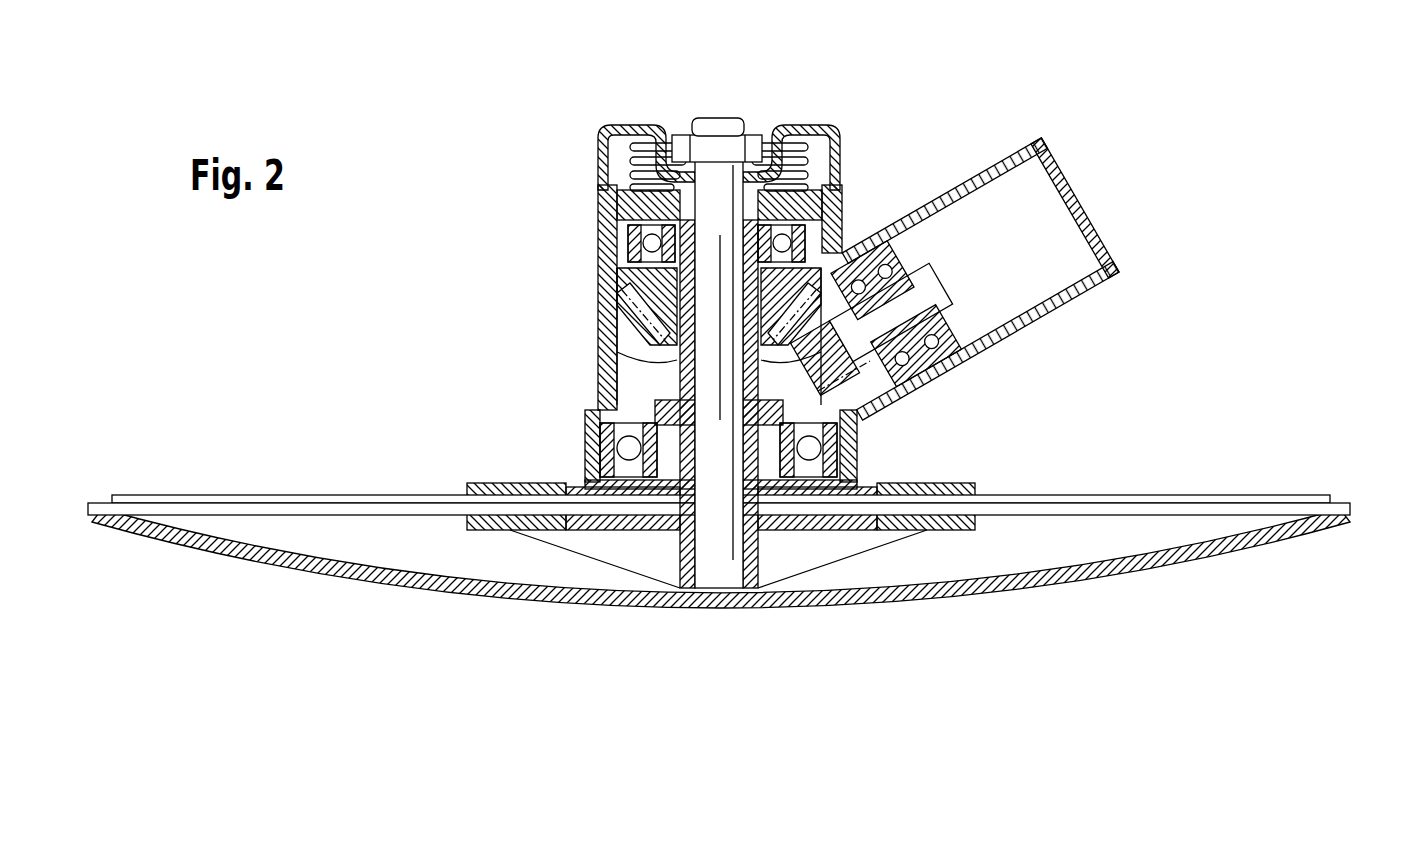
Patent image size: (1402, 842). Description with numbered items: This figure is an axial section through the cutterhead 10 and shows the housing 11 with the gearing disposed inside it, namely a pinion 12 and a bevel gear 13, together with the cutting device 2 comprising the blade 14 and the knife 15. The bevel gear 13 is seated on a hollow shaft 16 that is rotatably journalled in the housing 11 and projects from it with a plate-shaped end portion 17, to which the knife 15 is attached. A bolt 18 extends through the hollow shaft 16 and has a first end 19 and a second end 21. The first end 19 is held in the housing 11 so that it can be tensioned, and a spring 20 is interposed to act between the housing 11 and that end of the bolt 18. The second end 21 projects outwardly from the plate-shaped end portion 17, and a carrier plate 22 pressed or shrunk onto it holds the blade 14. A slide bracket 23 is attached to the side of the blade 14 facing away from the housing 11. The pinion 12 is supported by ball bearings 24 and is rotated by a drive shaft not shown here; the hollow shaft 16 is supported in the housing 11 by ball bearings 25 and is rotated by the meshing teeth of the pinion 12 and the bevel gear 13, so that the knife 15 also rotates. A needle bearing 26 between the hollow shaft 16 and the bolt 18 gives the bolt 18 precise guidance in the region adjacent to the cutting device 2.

The cutting device 2 is at (1342, 492).
The cutterhead 10 is at (508, 130).
The housing 11 is at (937, 212).
The pinion 12 is at (898, 398).
The bevel gear 13 is at (640, 287).
The blade 14 is at (1110, 508).
The knife 15 is at (1140, 497).
The hollow shaft 16 is at (660, 360).
The plate-shaped end portion 17 is at (862, 494).
The bolt 18 is at (826, 216).
The first end 19 is at (700, 118).
The spring 20 is at (792, 148).
The second end 21 is at (713, 565).
The carrier plate 22 is at (822, 510).
The slide bracket 23 is at (1003, 600).
The ball bearings 24 is at (963, 363).
The ball bearings 25 is at (612, 242).
The needle bearing 26 is at (655, 420).